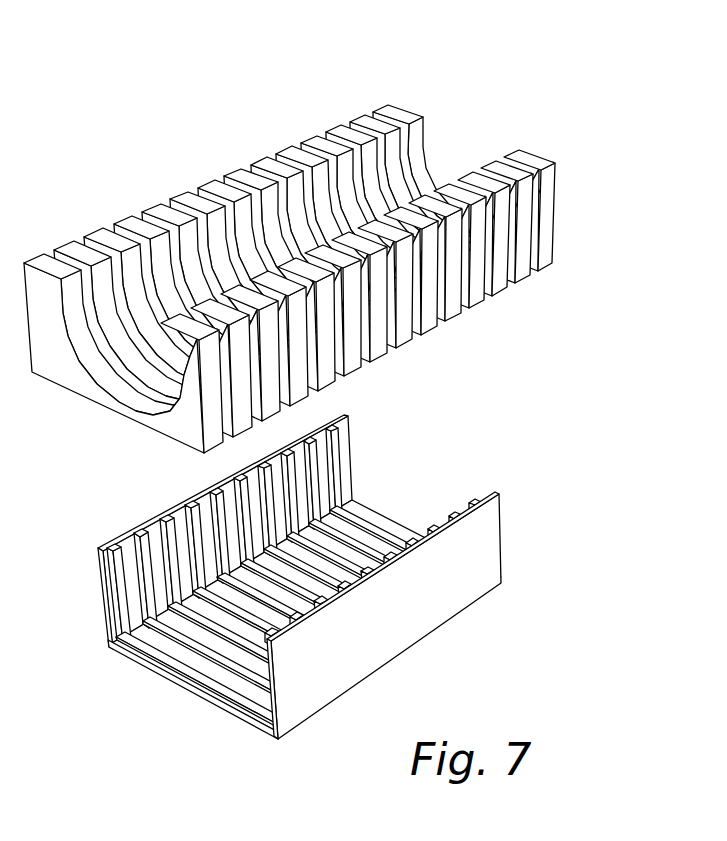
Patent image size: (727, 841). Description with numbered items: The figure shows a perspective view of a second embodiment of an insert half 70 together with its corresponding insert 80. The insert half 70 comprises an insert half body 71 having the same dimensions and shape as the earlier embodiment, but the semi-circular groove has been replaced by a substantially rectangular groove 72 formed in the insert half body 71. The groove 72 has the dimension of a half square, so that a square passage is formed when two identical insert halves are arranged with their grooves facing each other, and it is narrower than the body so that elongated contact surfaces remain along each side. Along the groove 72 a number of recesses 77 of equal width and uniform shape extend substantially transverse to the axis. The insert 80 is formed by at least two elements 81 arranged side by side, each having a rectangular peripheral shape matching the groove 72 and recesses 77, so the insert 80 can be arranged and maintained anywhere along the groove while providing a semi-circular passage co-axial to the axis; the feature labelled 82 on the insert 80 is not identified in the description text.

The insert half 70 is at (320, 578).
The insert half body 71 is at (414, 597).
The substantially rectangular groove 72 is at (147, 640).
The recesses 77 is at (205, 668).
The insert 80 is at (337, 228).
The elements 81 is at (553, 199).
The slot / fin of upper holder block 82 is at (512, 166).